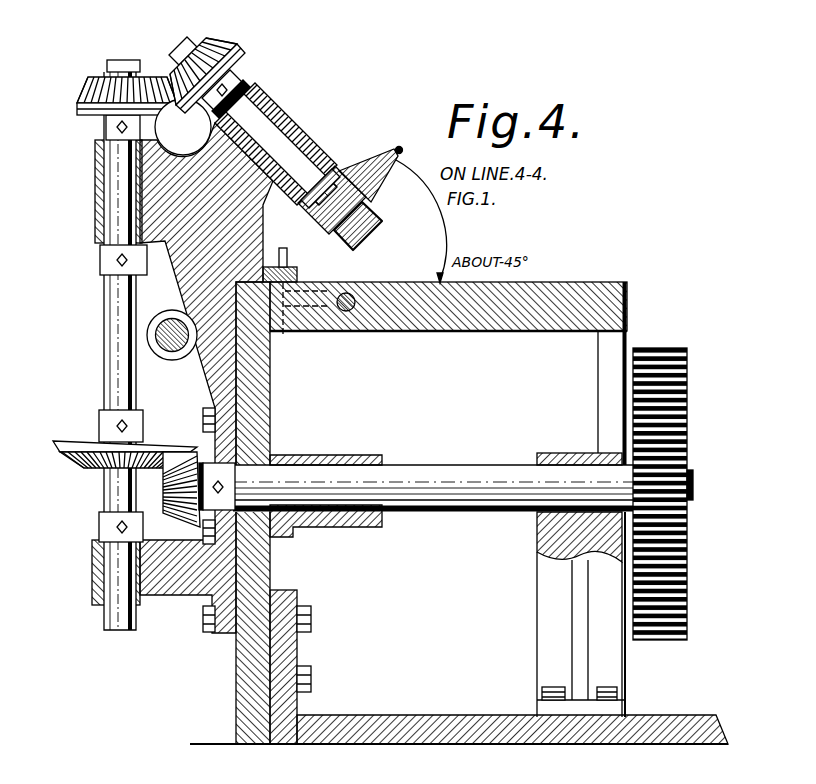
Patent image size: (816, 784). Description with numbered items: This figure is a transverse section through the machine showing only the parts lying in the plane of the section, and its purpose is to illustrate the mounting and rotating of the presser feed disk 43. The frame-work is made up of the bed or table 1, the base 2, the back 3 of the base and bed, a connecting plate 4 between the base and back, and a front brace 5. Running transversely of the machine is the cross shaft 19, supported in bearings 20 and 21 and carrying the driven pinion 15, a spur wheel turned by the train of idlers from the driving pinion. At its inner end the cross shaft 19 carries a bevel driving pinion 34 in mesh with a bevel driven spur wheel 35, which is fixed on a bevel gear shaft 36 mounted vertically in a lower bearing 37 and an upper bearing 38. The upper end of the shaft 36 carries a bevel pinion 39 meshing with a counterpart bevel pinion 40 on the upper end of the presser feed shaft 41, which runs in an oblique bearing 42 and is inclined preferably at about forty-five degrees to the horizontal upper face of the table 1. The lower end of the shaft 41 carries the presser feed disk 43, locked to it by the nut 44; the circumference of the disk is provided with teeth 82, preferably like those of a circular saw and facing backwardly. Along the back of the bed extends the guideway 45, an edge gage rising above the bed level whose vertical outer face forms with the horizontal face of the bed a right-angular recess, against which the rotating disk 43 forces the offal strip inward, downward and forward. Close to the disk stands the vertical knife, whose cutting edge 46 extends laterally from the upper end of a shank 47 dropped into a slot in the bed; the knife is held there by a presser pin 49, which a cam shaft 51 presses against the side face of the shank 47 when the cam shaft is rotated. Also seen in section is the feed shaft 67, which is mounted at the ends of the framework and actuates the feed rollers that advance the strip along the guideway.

The bed or table 1 is at (606, 310).
The base 2 is at (409, 723).
The back of the base and bed 3 is at (262, 408).
The connecting plate 4 is at (284, 659).
The front brace 5 is at (598, 394).
The driven pinion 15 is at (672, 454).
The cross shaft 19 is at (444, 468).
The bearing 20 is at (556, 460).
The bearing 21 is at (335, 462).
The bevel driving pinion 34 is at (193, 506).
The bevel driven spur wheel 35 is at (90, 462).
The bevel gear shaft 36 is at (105, 378).
The lower bearing 37 is at (96, 571).
The upper bearing 38 is at (99, 212).
The bevel pinion 39 is at (80, 101).
The counterpart bevel pinion 40 is at (232, 48).
The presser feed shaft 41 is at (268, 128).
The oblique bearing 42 is at (293, 162).
The presser feed disk 43 is at (399, 150).
The nut 44 is at (376, 214).
The guideway 45 is at (262, 282).
The cutting edge 46 is at (285, 248).
The shank 47 is at (284, 338).
The presser pin 49 is at (326, 310).
The cam shaft 51 is at (353, 308).
The feed shaft 67 is at (172, 352).
The teeth 82 is at (390, 162).